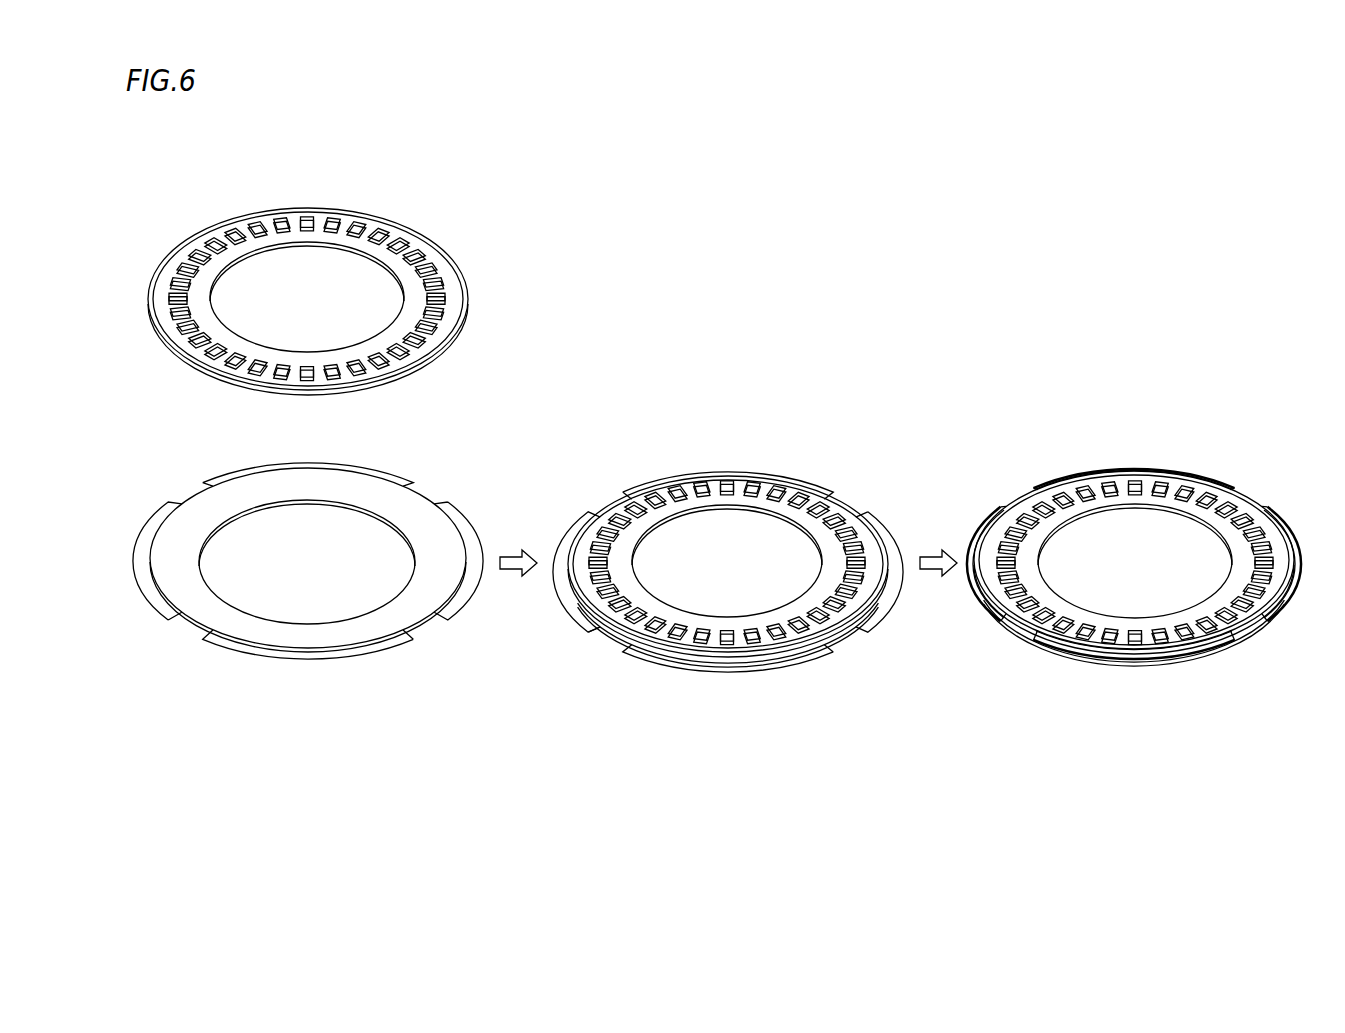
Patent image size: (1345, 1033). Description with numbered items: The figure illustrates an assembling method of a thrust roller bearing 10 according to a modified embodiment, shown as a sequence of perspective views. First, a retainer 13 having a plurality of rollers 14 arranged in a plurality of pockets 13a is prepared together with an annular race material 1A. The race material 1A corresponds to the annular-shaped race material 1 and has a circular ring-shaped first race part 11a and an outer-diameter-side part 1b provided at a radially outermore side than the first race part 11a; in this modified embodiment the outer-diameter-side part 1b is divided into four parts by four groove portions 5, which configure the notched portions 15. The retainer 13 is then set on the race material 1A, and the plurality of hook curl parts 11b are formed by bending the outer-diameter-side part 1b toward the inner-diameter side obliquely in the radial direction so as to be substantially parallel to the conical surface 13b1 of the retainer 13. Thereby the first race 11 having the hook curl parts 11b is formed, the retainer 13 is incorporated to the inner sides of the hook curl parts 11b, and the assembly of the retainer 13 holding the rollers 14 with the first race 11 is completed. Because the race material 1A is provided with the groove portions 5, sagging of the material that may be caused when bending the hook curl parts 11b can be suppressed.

The retainer 13 is at (248, 211).
The rollers 14 is at (375, 220).
The pockets 13a is at (403, 253).
The conical surface 13b1 is at (442, 353).
The race material 1A is at (397, 472).
The groove portions 5 is at (180, 508).
The first race part 11a is at (260, 638).
The outer-diameter-side part 1b is at (372, 653).
The race material 1 is at (807, 665).
The thrust roller bearing 10 is at (1137, 574).
The notched portions 15 is at (1003, 623).
The first race 11 is at (1277, 623).
The hook curl part 11b is at (1097, 657).